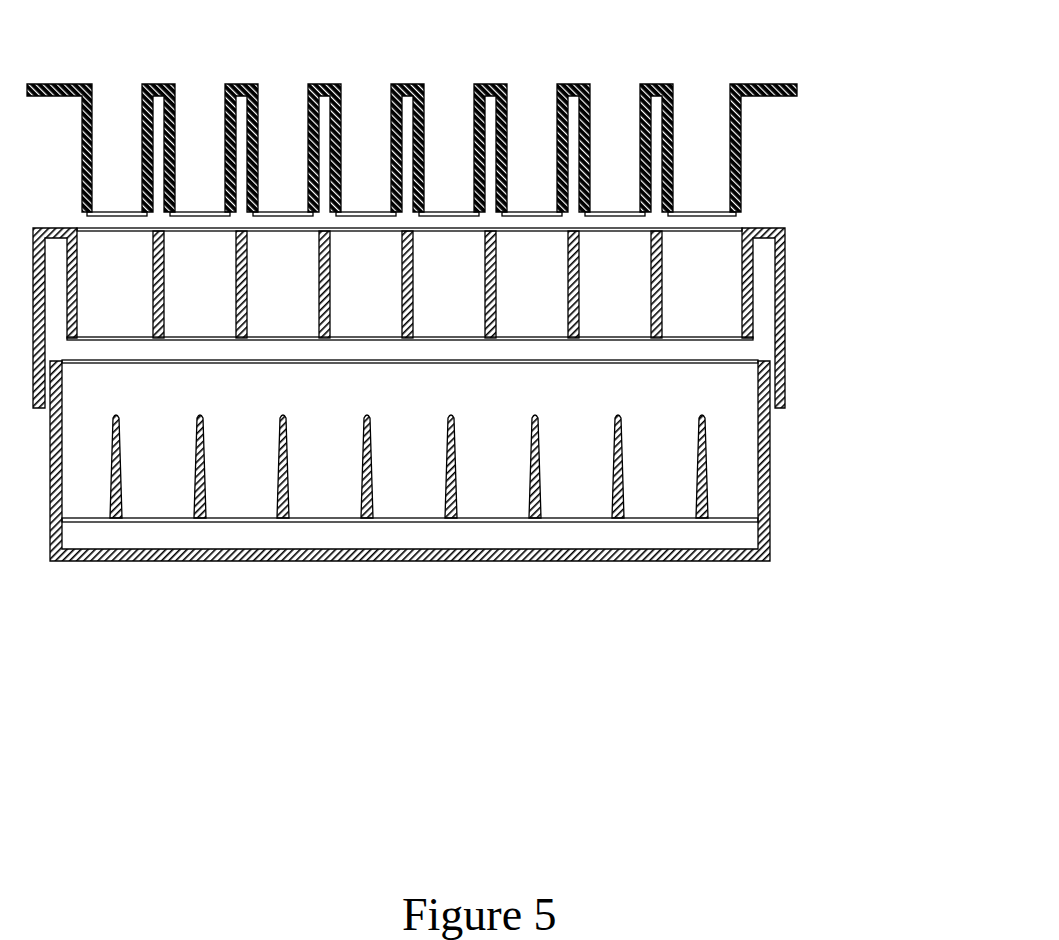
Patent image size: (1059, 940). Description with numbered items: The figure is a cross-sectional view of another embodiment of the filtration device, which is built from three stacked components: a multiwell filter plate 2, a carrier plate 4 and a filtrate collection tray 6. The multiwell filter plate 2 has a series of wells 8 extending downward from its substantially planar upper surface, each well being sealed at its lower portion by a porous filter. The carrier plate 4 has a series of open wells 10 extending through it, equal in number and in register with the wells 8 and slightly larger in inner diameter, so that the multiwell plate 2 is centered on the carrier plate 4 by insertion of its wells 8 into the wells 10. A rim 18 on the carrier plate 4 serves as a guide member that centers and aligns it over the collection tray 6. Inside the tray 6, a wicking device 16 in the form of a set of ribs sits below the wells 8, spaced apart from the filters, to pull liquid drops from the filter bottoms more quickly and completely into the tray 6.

The multiwell filter plate 2 is at (448, 108).
The wells 8 is at (700, 100).
The carrier plate 4 is at (464, 274).
The open wells 10 is at (747, 230).
The rim 18 is at (787, 333).
The filtrate collection tray 6 is at (455, 460).
The wicking device 16 is at (710, 472).